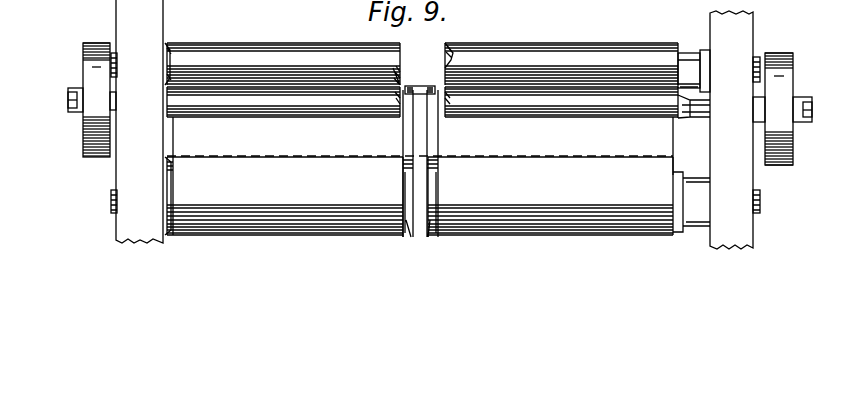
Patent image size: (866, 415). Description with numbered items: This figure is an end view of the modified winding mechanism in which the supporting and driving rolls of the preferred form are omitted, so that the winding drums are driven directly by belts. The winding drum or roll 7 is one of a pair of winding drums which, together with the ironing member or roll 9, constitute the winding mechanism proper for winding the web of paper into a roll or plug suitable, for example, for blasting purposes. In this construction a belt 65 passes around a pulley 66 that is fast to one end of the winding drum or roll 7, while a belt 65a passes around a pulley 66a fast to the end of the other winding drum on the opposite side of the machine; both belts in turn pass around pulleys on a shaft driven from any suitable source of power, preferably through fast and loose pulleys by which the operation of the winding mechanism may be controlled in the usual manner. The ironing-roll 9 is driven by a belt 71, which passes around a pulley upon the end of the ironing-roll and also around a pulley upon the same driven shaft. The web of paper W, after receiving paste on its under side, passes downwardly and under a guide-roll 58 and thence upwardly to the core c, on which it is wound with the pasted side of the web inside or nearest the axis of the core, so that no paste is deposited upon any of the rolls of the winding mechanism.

The belt 65 is at (107, 38).
The pulley 66 is at (90, 63).
The belt 65a is at (790, 53).
The pulley 66a is at (793, 62).
The ironing-roll 9 is at (445, 53).
The winding drum or roll 7 is at (447, 110).
The core c is at (414, 88).
The belt 71 is at (686, 58).
The guide-roll 58 is at (428, 237).
The web W is at (421, 136).